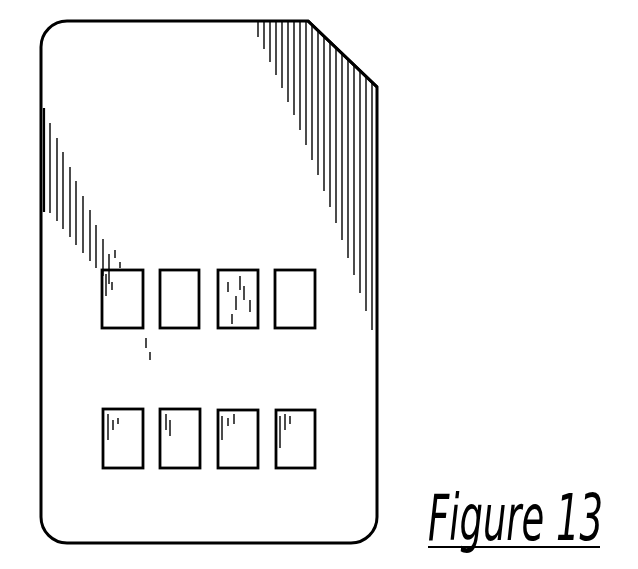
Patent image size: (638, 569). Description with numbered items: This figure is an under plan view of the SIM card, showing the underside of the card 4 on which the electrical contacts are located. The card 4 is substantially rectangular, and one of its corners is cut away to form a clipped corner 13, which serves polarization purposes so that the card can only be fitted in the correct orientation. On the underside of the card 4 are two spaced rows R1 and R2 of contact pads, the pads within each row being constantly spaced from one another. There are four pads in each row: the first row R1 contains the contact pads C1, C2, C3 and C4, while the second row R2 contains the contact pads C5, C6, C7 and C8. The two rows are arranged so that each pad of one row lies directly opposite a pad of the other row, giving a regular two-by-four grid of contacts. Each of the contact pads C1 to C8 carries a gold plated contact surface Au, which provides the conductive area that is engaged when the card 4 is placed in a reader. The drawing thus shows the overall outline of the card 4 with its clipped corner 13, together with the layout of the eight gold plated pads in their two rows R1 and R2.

The card 4 is at (392, 200).
The clipped corner 13 is at (335, 46).
The row R1 is at (82, 455).
The row R2 is at (92, 279).
The contact pad C1 is at (118, 409).
The contact pad C2 is at (186, 380).
The contact pad C3 is at (240, 410).
The contact pad C4 is at (308, 410).
The contact pad C5 is at (118, 270).
The contact pad C6 is at (178, 270).
The contact pad C7 is at (240, 270).
The contact pad C8 is at (290, 270).
The gold plated contact surfaces Au is at (130, 293).